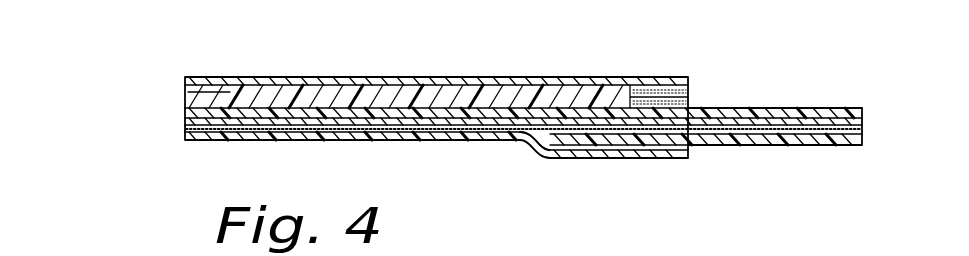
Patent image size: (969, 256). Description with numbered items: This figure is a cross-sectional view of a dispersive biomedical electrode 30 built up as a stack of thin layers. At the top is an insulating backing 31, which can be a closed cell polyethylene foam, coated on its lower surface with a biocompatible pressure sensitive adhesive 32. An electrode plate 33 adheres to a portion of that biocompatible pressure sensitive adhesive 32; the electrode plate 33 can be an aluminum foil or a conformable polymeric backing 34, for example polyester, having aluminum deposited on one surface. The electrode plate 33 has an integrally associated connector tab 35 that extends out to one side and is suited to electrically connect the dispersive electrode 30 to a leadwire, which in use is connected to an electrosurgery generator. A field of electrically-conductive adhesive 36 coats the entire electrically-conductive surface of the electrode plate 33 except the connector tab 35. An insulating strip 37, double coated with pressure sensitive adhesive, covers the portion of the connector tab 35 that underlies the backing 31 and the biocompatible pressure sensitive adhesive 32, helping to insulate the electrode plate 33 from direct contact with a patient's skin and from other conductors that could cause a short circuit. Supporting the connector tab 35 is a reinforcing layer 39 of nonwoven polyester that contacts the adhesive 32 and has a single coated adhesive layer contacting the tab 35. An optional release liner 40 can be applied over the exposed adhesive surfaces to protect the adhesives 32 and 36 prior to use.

The dispersive electrode 30 is at (597, 73).
The insulating backing 31 is at (215, 139).
The biocompatible pressure sensitive adhesive 32 is at (511, 138).
The electrode plate 33 is at (190, 112).
The conformable polymeric backing 34 is at (187, 120).
The connector tab 35 is at (798, 109).
The electrically-conductive adhesive 36 is at (195, 92).
The insulating strip 37 is at (689, 93).
The reinforcing layer 39 is at (773, 144).
The release liner 40 is at (380, 77).